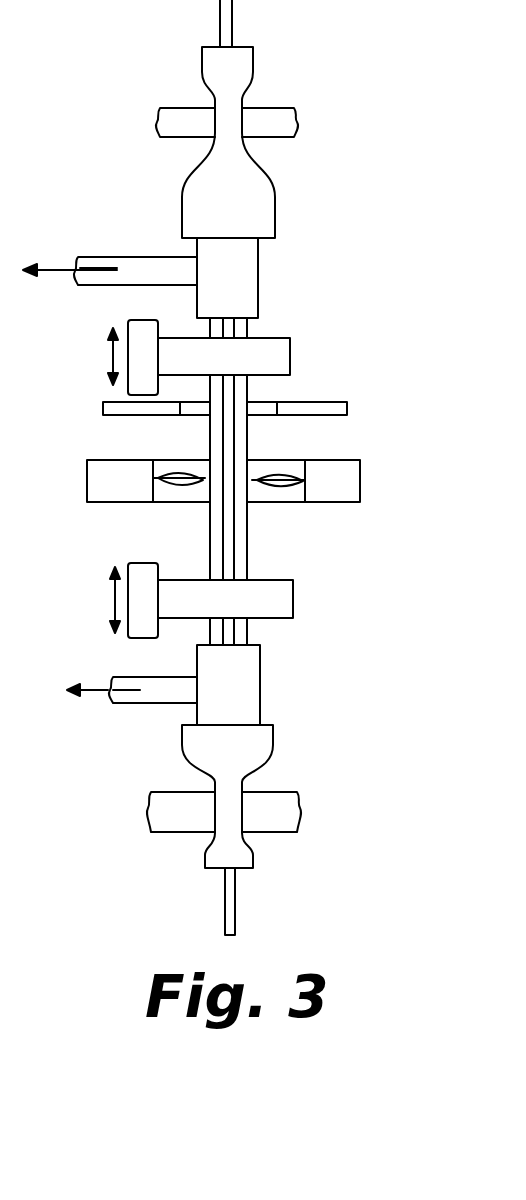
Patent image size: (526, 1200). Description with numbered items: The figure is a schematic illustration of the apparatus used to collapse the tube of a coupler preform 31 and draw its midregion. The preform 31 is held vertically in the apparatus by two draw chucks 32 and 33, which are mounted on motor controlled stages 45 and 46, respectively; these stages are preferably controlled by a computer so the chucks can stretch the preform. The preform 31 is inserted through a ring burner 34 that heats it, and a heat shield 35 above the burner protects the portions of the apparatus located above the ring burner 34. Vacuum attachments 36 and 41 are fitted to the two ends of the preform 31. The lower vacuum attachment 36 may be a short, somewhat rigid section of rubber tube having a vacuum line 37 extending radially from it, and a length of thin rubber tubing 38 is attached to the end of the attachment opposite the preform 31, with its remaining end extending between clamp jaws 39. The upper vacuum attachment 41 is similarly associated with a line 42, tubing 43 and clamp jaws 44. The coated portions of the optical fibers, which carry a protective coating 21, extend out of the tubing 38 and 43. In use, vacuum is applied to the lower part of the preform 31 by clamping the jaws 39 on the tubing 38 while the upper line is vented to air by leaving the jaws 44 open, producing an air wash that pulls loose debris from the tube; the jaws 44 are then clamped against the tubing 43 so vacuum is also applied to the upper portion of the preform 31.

The protective coating 21 is at (233, 22).
The preform 31 is at (250, 535).
The chuck 32 is at (292, 358).
The chuck 33 is at (295, 597).
The ring burner 34 is at (328, 460).
The heat shield 35 is at (320, 402).
The vacuum attachment 36 is at (248, 678).
The vacuum line 37 is at (133, 705).
The thin rubber tubing 38 is at (260, 747).
The clamp jaws 39 is at (303, 810).
The upper vacuum attachment 41 is at (250, 277).
The vacuum line 42 is at (135, 257).
The tubing 43 is at (262, 198).
The clamp jaws 44 is at (157, 118).
The motor controlled stage 45 is at (137, 328).
The motor controlled stage 46 is at (145, 573).